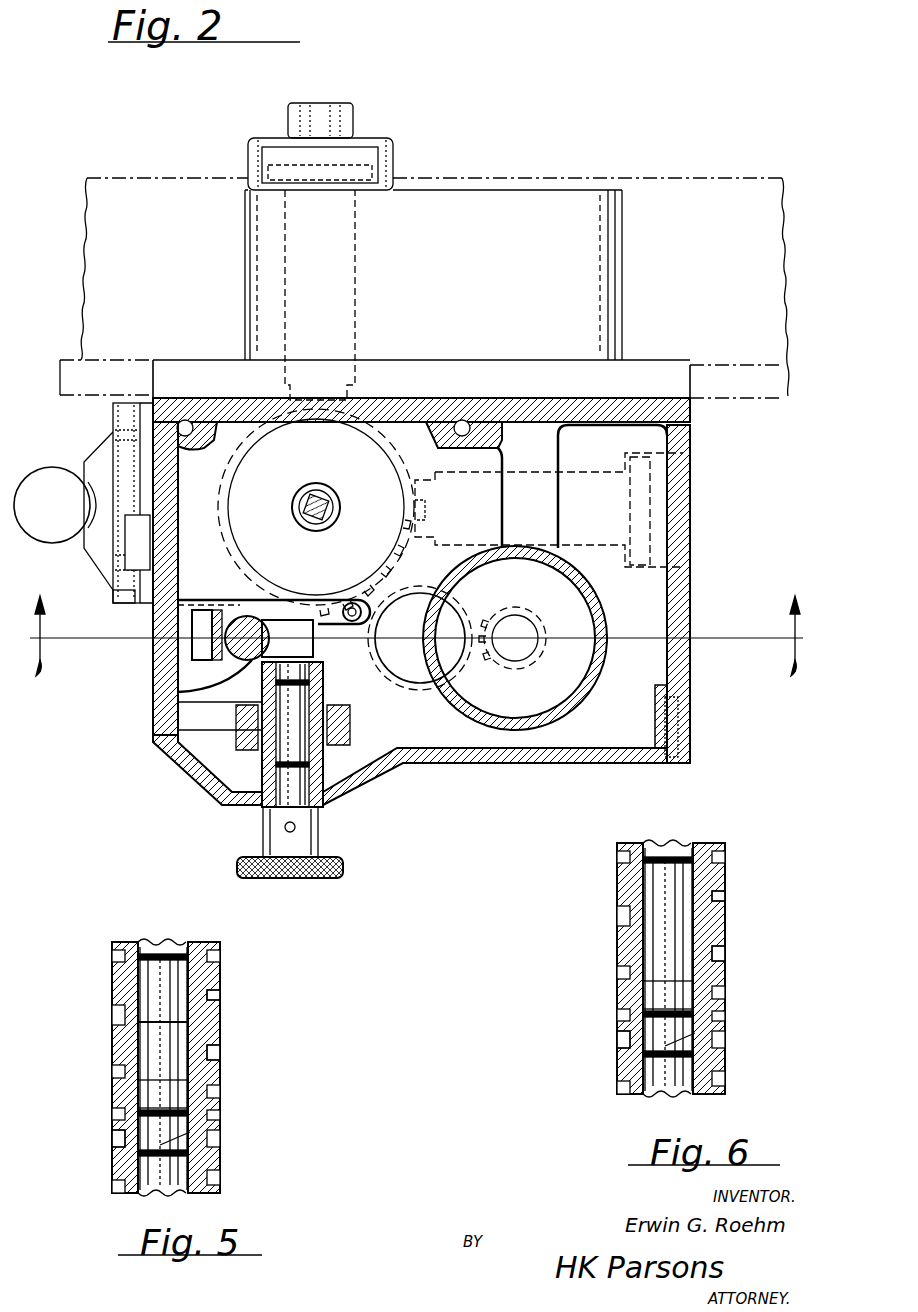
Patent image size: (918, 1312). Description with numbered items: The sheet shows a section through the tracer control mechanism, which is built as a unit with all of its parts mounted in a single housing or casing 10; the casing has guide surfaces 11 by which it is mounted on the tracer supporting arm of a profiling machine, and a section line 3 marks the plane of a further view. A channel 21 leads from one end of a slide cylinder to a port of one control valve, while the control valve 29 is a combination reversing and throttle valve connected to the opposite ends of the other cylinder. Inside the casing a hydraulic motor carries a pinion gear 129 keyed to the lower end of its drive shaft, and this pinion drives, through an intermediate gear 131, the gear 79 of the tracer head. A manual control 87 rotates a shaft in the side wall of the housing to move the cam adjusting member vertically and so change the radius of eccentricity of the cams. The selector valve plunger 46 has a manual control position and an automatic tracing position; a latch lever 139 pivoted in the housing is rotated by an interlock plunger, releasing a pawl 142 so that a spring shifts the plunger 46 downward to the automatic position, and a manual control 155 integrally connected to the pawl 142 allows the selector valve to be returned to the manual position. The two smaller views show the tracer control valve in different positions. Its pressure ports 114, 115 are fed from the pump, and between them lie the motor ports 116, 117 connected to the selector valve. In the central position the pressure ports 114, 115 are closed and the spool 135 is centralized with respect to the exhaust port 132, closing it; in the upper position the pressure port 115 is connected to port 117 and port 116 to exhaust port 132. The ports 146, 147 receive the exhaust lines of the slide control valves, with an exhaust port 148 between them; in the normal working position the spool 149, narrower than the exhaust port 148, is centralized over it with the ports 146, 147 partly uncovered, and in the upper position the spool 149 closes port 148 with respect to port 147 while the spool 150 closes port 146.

In FIG. 2, the housing 10 is at (690, 683).
In FIG. 2, the guide surfaces 11 is at (690, 363).
In FIG. 2, the channel 21 is at (355, 280).
In FIG. 2, the control valve 29 is at (612, 470).
In FIG. 2, the plunger 46 is at (178, 681).
In FIG. 2, the gear 79 is at (432, 400).
In FIG. 2, the manual control 87 is at (60, 470).
In FIG. 2, the pinion gear 129 is at (526, 670).
In FIG. 2, the intermediate gear 131 is at (420, 714).
In FIG. 2, the latch lever 139 is at (195, 650).
In FIG. 2, the pawl 142 is at (300, 650).
In FIG. 2, the manual control 155 is at (320, 840).
In FIG. 2, the section line 3- 3 is at (425, 636).
In FIG. 5, the pressure port 115 is at (222, 960).
In FIG. 6, the pressure port 115 is at (727, 868).
In FIG. 5, the motor port 117 is at (222, 994).
In FIG. 6, the motor port 117 is at (727, 896).
In FIG. 5, the spool 135 is at (160, 1026).
In FIG. 5, the motor port 116 is at (222, 1056).
In FIG. 6, the motor port 116 is at (727, 960).
In FIG. 5, the pressure port 114 is at (222, 1088).
In FIG. 6, the pressure port 114 is at (727, 992).
In FIG. 5, the port 147 is at (222, 1116).
In FIG. 6, the port 147 is at (727, 1022).
In FIG. 5, the spool 149 is at (190, 1132).
In FIG. 6, the spool 149 is at (695, 1033).
In FIG. 5, the exhaust port 148 is at (112, 1141).
In FIG. 6, the exhaust port 148 is at (617, 1047).
In FIG. 5, the port 146 is at (222, 1176).
In FIG. 6, the port 146 is at (727, 1085).
In FIG. 5, the exhaust port 132 is at (112, 1025).
In FIG. 6, the exhaust port 132 is at (617, 930).
In FIG. 5, the spool 150 is at (152, 1186).
In FIG. 6, the spool 150 is at (660, 1098).